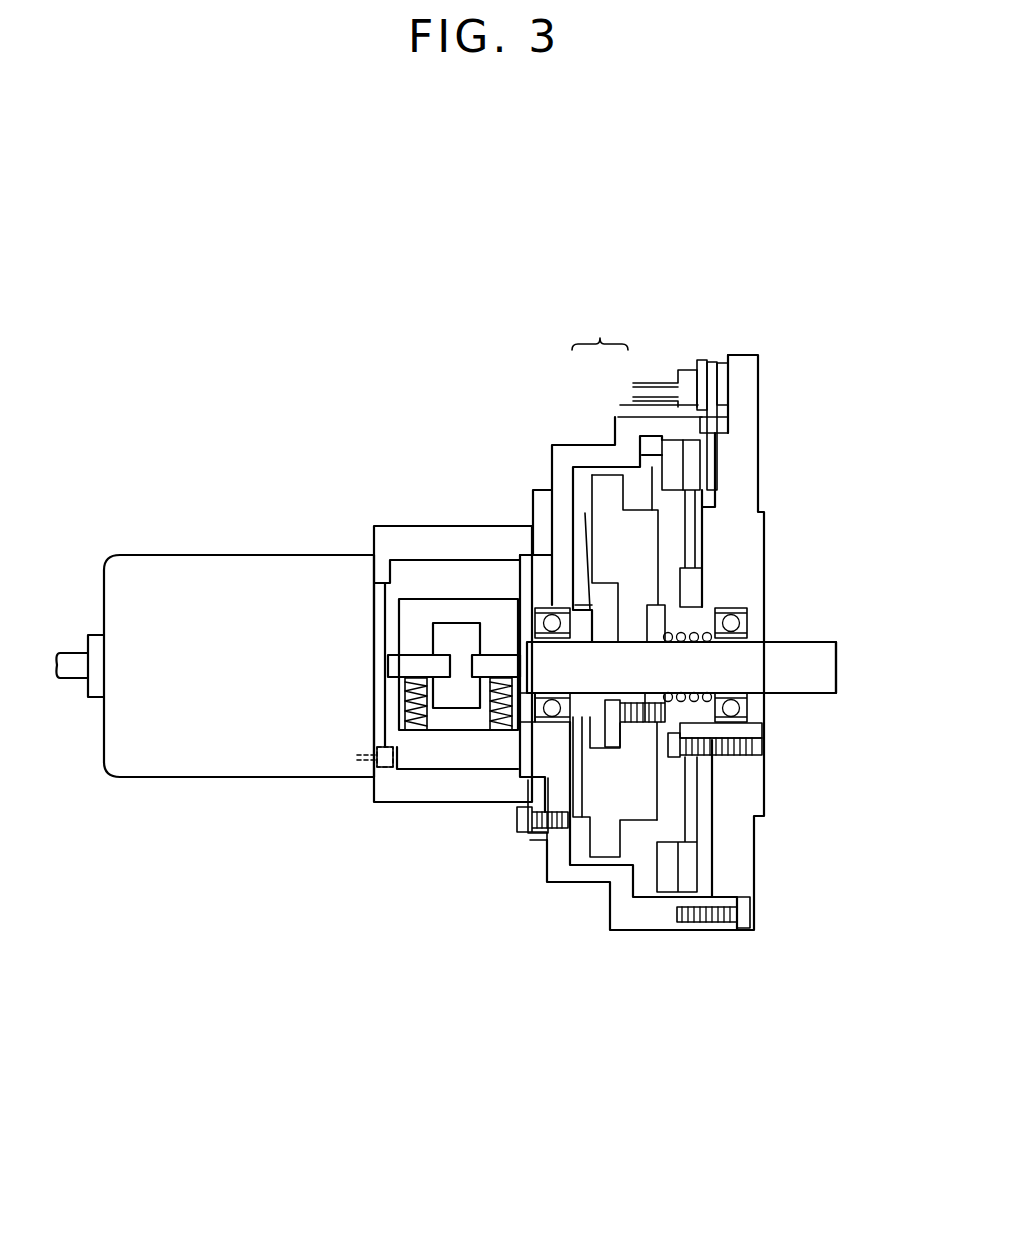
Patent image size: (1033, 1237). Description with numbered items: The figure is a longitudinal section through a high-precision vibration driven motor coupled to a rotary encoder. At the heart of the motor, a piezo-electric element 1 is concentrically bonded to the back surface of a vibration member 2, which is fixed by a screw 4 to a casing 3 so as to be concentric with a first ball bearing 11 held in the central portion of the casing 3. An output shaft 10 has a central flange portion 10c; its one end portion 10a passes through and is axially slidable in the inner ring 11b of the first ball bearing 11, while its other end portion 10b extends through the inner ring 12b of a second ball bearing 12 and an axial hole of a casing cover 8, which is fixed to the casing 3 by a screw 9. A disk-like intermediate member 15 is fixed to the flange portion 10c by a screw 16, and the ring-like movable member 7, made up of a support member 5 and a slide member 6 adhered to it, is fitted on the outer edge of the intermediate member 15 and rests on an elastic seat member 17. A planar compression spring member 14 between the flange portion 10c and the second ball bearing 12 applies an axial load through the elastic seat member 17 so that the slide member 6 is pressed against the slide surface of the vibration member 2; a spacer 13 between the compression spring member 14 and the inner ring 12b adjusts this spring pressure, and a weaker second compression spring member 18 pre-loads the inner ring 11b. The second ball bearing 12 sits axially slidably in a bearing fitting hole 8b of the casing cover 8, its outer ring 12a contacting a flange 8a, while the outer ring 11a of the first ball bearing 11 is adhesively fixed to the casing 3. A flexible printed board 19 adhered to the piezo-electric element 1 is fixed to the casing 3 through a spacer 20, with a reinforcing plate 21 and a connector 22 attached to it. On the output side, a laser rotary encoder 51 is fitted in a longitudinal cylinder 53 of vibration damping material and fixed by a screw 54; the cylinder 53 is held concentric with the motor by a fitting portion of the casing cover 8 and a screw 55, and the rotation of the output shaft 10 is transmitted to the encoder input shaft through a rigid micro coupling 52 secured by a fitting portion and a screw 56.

The piezo-electric element 1 is at (708, 472).
The vibration member 2 is at (695, 462).
The casing 3 is at (745, 520).
The screw 4 is at (700, 830).
The support member 5 is at (600, 500).
The slide member 6 is at (637, 488).
The movable member 7 is at (600, 328).
The casing cover 8 is at (633, 423).
The flange 8a is at (535, 607).
The bearing fitting hole 8b is at (548, 605).
The screw 9 is at (743, 930).
The output shaft 10 is at (745, 665).
The one end portion 10a is at (842, 658).
The other end portion 10b is at (483, 717).
The flange portion 10c is at (708, 700).
The first ball bearing 11 is at (755, 628).
The outer ring 11a is at (747, 718).
The inner ring 11b is at (747, 696).
The second ball bearing 12 is at (530, 700).
The outer ring 12a is at (552, 840).
The inner ring 12b is at (525, 690).
The spacer 13 is at (587, 800).
The compression spring member 14 is at (583, 513).
The intermediate member 15 is at (563, 525).
The screw 16 is at (612, 718).
The elastic seat member 17 is at (603, 520).
The second compression spring member 18 is at (705, 620).
The flexible printed board 19 is at (730, 428).
The spacer 20 is at (720, 377).
The reinforcing plate 21 is at (703, 362).
The connector 22 is at (683, 368).
The laser rotary encoder 51 is at (218, 557).
The micro coupling 52 is at (408, 637).
The longitudinal cylinder 53 is at (408, 530).
The screw 54 is at (393, 768).
The screw 55 is at (523, 830).
The screw 56 is at (415, 720).